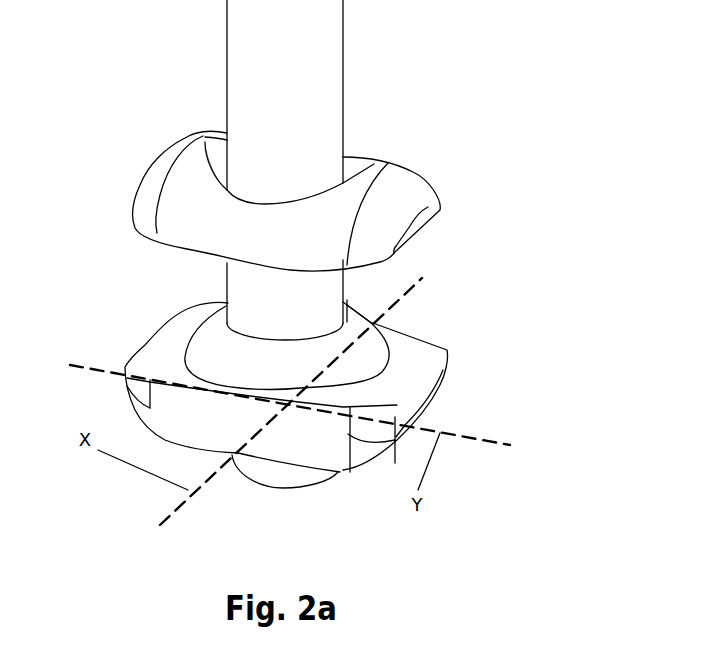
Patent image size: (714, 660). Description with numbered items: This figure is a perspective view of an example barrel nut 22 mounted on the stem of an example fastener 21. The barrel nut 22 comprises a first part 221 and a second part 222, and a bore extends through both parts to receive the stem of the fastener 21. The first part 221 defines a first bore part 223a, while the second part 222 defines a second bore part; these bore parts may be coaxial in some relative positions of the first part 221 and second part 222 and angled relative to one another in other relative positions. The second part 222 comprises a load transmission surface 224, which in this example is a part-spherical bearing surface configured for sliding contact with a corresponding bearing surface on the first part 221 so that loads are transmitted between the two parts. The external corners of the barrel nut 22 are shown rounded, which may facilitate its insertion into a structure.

The fastener 21 is at (313, 93).
The barrel nut 22 is at (316, 320).
The first part 221 is at (251, 189).
The second part 222 is at (246, 409).
The first bore part 223a is at (215, 157).
The load transmission surface 224 is at (218, 340).